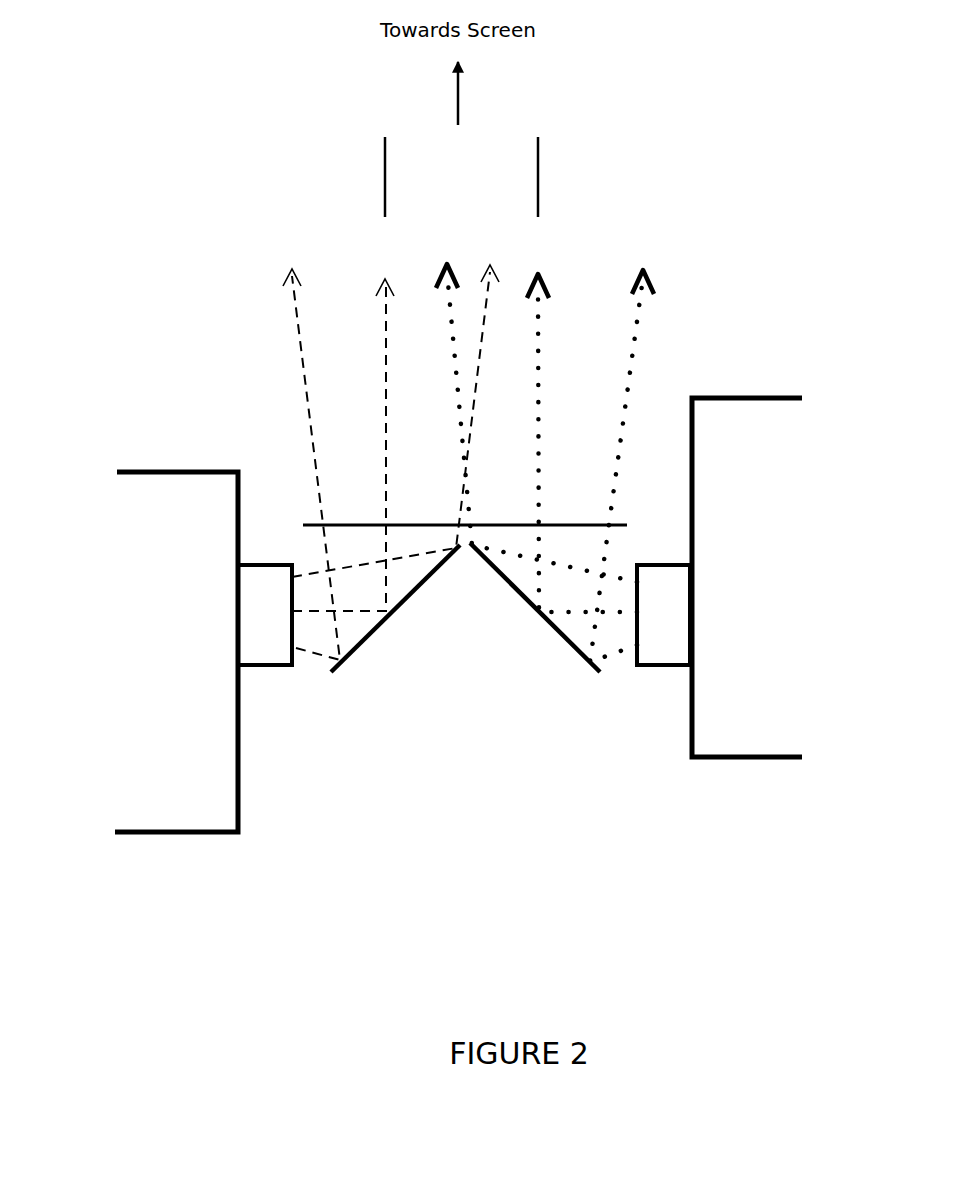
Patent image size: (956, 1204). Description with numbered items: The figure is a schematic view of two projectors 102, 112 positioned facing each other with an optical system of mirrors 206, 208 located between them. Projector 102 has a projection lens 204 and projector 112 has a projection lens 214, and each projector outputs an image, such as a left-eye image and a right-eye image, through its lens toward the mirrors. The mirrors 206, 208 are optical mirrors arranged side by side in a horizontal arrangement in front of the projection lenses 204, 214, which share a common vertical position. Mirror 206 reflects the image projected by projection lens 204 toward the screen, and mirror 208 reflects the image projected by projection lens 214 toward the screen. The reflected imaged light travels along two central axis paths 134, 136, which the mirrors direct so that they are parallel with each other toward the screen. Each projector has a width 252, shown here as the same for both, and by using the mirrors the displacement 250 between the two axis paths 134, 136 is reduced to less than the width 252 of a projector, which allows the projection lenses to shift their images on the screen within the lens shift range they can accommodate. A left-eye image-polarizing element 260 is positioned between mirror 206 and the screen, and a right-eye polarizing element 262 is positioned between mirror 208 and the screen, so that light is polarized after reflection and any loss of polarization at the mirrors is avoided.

The projector 102 is at (117, 852).
The projector 112 is at (752, 768).
The projection lens 204 is at (278, 678).
The projection lens 214 is at (659, 684).
The mirror 206 is at (364, 668).
The mirror 208 is at (566, 675).
The left-eye image-polarizing element 260 is at (290, 525).
The right-eye polarizing element 262 is at (640, 525).
The axis path 134 is at (348, 431).
The axis path 136 is at (582, 432).
The displacement 250 is at (389, 176).
The width 252 is at (97, 480).